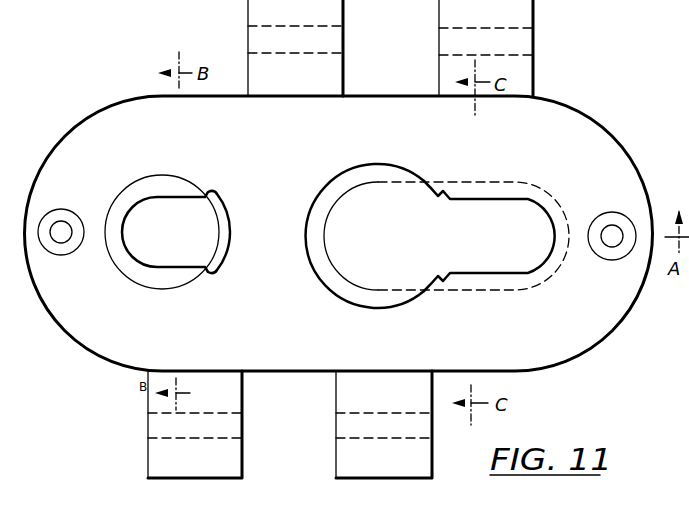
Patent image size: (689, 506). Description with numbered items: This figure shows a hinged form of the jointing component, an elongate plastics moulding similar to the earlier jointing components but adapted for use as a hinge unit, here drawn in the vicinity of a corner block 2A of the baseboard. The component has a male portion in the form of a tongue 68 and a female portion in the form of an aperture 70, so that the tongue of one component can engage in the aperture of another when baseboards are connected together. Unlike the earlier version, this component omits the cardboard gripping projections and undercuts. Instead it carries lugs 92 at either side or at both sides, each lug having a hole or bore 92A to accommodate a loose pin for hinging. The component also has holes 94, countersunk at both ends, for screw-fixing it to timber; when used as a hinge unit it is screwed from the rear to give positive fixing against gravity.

The corner block 2A is at (89, 326).
The tongue 68 is at (153, 204).
The aperture 70 is at (512, 218).
The lug 92 is at (440, 71).
The hole or bore 92A is at (265, 28).
The hole 94 is at (62, 222).